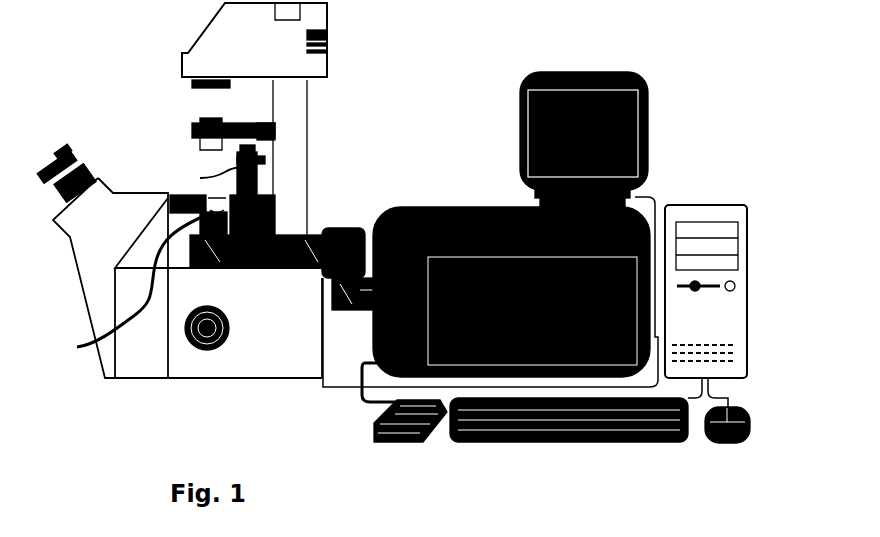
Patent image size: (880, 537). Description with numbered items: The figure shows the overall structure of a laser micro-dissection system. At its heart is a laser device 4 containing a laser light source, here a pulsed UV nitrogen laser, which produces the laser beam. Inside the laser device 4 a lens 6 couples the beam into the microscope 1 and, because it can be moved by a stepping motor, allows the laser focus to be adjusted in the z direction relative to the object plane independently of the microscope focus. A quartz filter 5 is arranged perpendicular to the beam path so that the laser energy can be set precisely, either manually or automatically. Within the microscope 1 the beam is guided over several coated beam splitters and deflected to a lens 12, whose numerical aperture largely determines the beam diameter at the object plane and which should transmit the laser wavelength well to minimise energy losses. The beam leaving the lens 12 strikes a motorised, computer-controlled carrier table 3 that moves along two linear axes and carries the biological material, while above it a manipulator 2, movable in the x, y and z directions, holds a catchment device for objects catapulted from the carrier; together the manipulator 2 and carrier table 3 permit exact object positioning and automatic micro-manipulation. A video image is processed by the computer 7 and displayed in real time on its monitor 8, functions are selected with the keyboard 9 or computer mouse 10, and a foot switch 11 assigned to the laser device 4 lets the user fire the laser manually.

The microscope 1 is at (83, 296).
The manipulator 2 is at (272, 172).
The carrier table 3 is at (193, 195).
The laser device 4 is at (465, 208).
The quartz filter 5 is at (378, 326).
The lens 6 is at (366, 315).
The computer 7 is at (748, 240).
The monitor 8 is at (650, 90).
The keyboard 9 is at (555, 442).
The computer mouse 10 is at (750, 420).
The foot switch 11 is at (405, 442).
The lens 12 is at (130, 294).